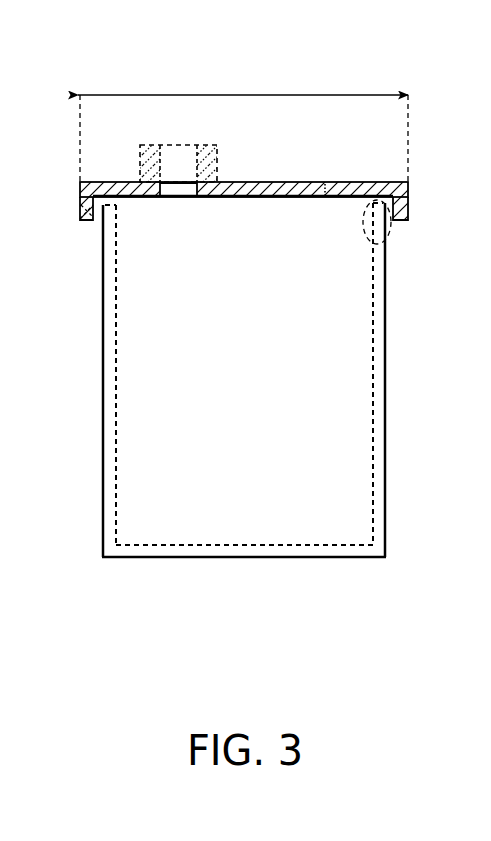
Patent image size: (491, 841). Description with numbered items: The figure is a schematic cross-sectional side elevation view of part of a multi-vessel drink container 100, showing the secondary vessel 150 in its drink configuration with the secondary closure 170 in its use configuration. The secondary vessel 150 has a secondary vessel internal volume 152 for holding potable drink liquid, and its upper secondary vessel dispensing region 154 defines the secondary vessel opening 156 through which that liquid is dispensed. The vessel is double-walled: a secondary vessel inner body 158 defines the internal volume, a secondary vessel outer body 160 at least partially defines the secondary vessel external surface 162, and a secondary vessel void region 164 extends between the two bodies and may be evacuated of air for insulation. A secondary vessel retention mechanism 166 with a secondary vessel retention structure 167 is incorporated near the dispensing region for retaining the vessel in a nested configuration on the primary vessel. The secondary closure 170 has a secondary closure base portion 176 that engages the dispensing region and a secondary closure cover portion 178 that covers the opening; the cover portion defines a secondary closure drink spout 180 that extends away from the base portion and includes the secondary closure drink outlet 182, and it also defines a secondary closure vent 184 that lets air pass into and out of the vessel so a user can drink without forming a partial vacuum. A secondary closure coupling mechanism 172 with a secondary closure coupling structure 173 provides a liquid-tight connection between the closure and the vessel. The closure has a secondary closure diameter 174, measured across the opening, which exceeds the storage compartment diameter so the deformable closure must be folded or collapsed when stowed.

The multi-vessel drink container 100 is at (143, 58).
The secondary vessel 150 is at (84, 340).
The secondary vessel internal volume 152 is at (234, 221).
The secondary vessel dispensing region 154 is at (122, 222).
The secondary vessel opening 156 is at (118, 211).
The secondary vessel inner body 158 is at (117, 405).
The secondary vessel outer body 160 is at (100, 395).
The secondary vessel external surface 162 is at (103, 412).
The secondary vessel void region 164 is at (109, 471).
The secondary vessel retention mechanism 166 is at (81, 206).
The secondary vessel retention structure 167 is at (82, 218).
The secondary closure 170 is at (239, 168).
The secondary closure coupling mechanism 172 is at (378, 198).
The secondary closure coupling structure 173 is at (371, 236).
The secondary closure diameter 174 is at (243, 95).
The secondary closure base portion 176 is at (80, 203).
The secondary closure cover portion 178 is at (372, 179).
The secondary closure drink spout 180 is at (140, 164).
The secondary closure drink outlet 182 is at (195, 186).
The secondary closure vent 184 is at (324, 192).